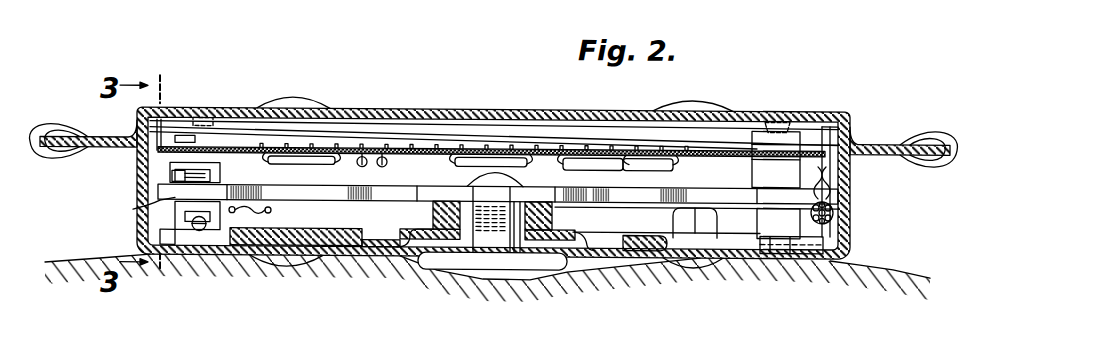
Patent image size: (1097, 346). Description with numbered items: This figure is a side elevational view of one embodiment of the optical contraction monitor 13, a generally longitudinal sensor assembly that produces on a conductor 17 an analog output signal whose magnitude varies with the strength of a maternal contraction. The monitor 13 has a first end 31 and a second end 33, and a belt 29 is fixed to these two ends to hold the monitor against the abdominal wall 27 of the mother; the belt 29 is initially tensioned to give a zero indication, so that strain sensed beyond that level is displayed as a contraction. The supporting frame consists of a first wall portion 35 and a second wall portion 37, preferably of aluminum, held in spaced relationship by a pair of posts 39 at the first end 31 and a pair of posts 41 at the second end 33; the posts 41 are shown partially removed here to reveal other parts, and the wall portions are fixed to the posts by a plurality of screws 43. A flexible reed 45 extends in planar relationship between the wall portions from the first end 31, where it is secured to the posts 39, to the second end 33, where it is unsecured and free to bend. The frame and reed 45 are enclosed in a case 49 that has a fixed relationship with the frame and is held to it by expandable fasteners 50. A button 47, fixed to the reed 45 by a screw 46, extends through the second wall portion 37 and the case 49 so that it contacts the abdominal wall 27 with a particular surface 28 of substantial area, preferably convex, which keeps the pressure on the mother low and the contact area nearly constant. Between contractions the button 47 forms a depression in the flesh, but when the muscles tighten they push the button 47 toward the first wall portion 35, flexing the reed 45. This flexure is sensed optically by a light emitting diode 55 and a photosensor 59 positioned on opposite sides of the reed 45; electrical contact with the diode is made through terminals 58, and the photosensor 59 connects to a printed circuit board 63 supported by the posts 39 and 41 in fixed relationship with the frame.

The optical contraction monitor 13 is at (481, 104).
The conductor 17 is at (838, 215).
The abdominal wall 27 is at (547, 288).
The particular surface 28 is at (452, 279).
The belt 29 is at (53, 121).
The first end 31 is at (773, 104).
The second end 33 is at (268, 103).
The first wall portion 35 is at (570, 128).
The second wall portion 37 is at (733, 245).
The posts 39 is at (767, 172).
The posts 41 is at (213, 152).
The screws 43 is at (200, 121).
The reed 45 is at (337, 192).
The screw 46 is at (483, 181).
The button 47 is at (484, 264).
The case 49 is at (127, 215).
The expandable fasteners 50 is at (293, 101).
The light emitting diode 55 is at (193, 221).
The terminals 58 is at (190, 214).
The photosensor 59 is at (210, 169).
The printed circuit board 63 is at (430, 151).